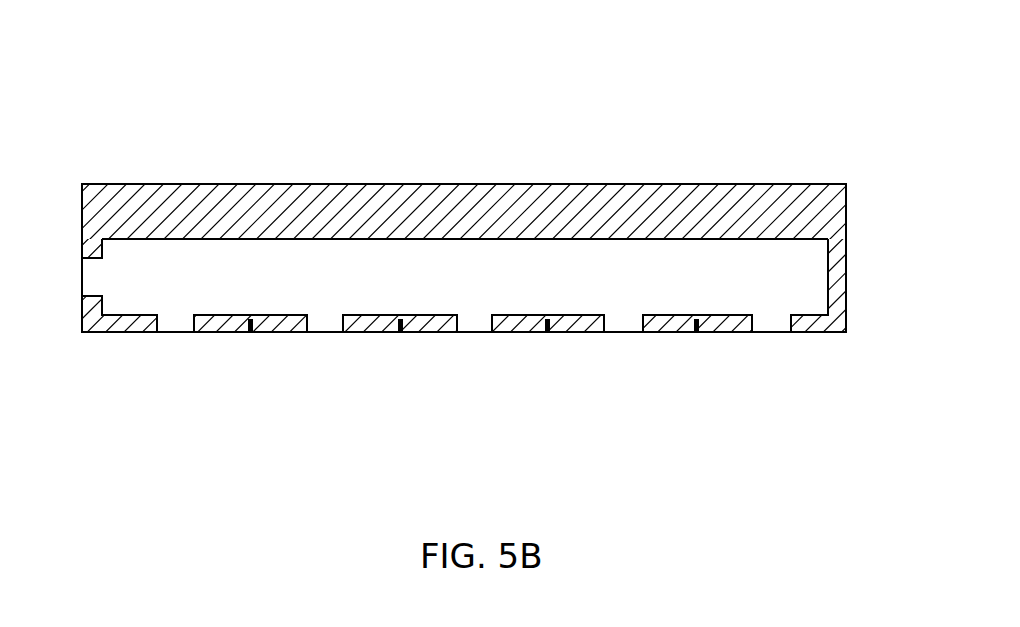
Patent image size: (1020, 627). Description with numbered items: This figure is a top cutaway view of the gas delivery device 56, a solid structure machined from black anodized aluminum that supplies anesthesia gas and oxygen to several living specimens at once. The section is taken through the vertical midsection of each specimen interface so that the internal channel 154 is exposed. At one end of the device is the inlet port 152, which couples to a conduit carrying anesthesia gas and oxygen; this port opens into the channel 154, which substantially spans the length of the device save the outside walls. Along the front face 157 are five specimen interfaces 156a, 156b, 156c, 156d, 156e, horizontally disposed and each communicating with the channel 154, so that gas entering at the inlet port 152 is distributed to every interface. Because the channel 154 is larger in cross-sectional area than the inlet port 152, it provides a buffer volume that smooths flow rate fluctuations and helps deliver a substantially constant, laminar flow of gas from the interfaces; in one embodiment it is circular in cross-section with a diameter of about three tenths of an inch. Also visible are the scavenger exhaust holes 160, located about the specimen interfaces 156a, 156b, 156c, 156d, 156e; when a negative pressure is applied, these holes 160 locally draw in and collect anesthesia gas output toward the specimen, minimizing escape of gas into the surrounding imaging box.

The gas delivery device 56 is at (138, 93).
The inlet port 152 is at (83, 246).
The channel 154 is at (220, 239).
The specimen interface 156a is at (177, 322).
The specimen interface 156b is at (327, 322).
The specimen interface 156c is at (477, 322).
The specimen interface 156d is at (623, 322).
The specimen interface 156e is at (772, 322).
The front face 157 is at (845, 333).
The holes 160 is at (697, 335).